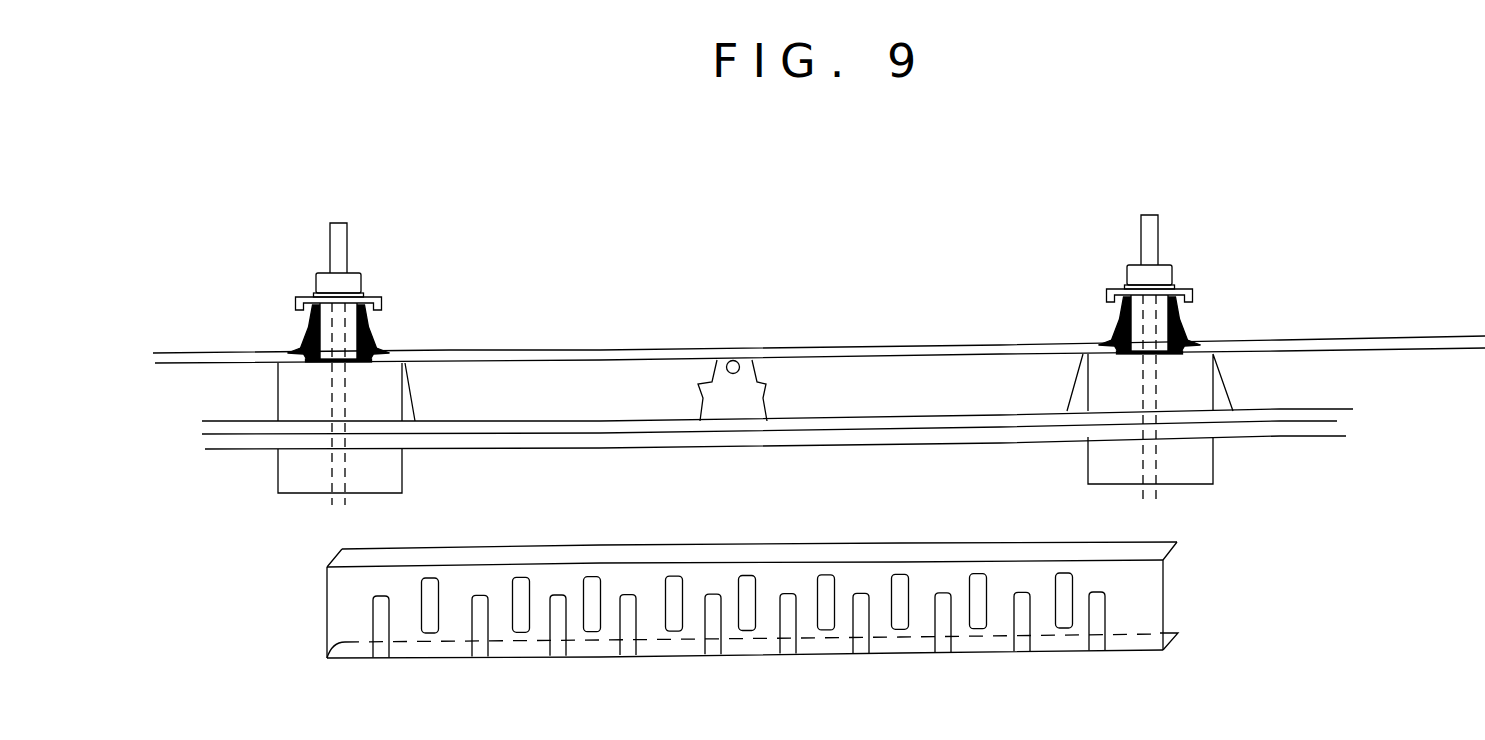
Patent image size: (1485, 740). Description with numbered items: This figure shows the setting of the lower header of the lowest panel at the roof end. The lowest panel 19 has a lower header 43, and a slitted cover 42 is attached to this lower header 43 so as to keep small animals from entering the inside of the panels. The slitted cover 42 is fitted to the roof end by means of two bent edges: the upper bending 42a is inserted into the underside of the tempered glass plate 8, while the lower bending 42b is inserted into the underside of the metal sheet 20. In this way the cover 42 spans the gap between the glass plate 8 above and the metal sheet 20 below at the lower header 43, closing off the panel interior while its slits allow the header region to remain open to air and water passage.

The tempered glass plate 8 is at (612, 348).
The lowest panel 19 is at (753, 348).
The metal sheet 20 is at (512, 421).
The lower header 43 is at (885, 390).
The slitted cover 42 is at (1193, 592).
The upper bending 42a is at (715, 558).
The lower bending 42b is at (1178, 636).